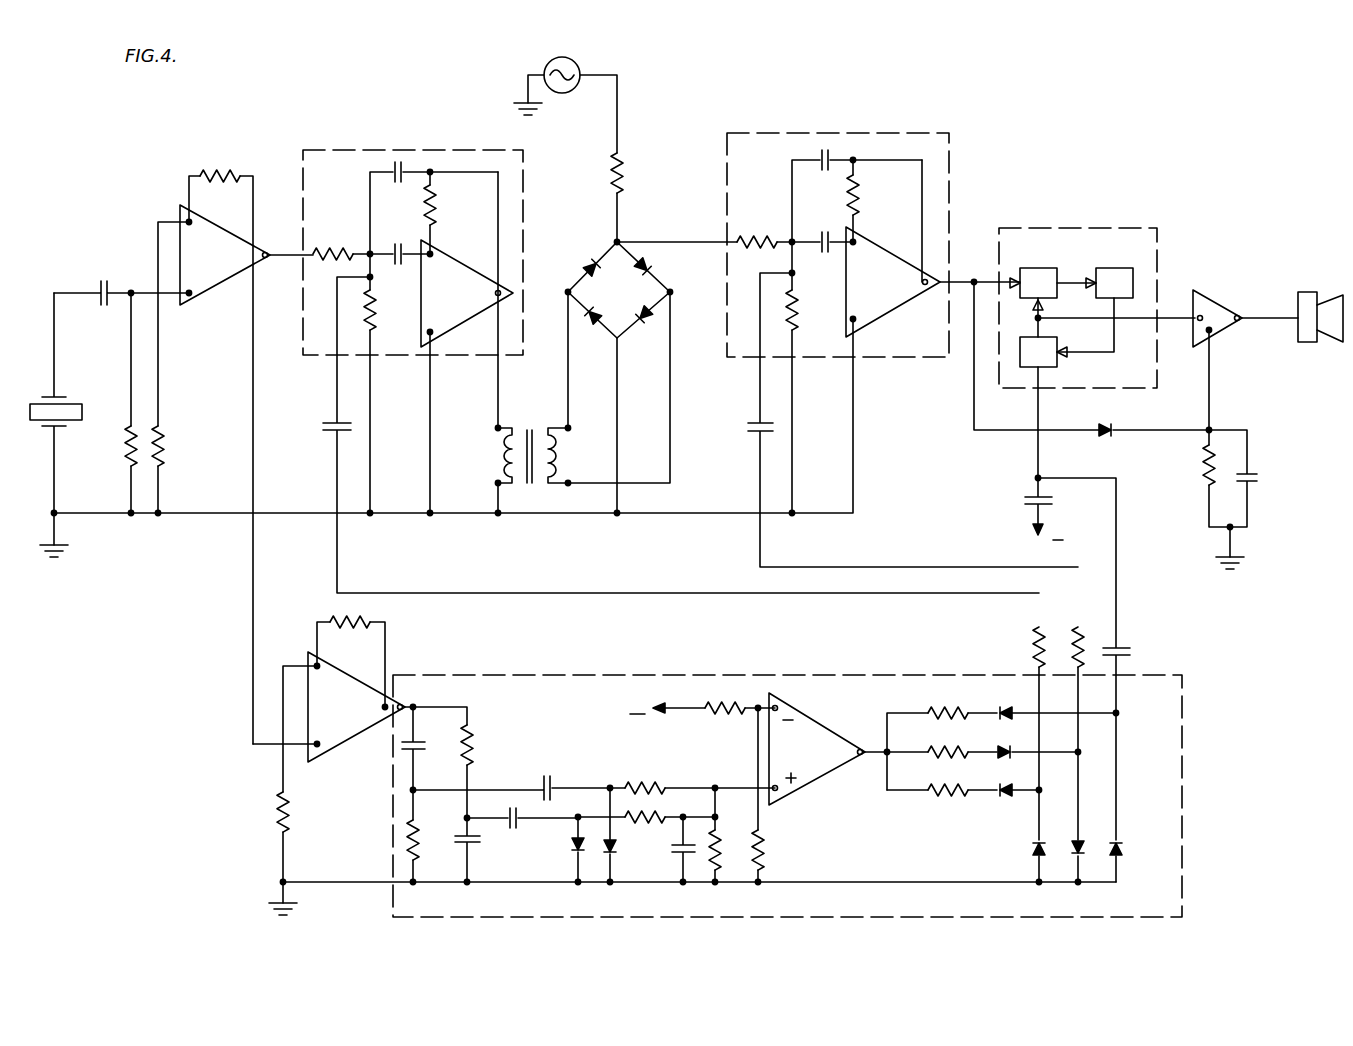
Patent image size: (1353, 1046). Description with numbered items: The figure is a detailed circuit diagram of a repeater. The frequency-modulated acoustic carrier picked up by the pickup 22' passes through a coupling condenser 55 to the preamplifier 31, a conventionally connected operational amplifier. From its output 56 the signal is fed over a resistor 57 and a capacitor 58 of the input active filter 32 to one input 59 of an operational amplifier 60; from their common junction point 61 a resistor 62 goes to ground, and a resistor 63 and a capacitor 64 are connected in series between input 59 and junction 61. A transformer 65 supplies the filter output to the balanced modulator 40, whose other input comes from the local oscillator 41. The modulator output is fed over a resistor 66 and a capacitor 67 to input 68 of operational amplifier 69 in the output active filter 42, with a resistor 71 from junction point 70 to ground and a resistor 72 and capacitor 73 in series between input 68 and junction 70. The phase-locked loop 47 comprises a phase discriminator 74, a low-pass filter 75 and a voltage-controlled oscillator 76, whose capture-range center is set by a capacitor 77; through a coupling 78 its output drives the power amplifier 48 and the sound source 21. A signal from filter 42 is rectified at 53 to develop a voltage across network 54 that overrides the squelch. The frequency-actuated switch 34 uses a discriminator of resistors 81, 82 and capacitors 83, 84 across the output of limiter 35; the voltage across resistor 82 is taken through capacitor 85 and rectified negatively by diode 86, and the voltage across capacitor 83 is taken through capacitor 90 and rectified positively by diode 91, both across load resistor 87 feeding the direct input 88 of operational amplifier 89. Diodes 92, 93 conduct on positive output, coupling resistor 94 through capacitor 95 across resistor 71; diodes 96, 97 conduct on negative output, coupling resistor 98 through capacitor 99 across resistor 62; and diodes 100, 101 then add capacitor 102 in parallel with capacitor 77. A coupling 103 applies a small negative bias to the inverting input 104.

The sound source 21 is at (1314, 291).
The pickup 22' is at (65, 403).
The preamplifier 31 is at (222, 265).
The input active filter 32 is at (410, 148).
The frequency-actuated switch 34 is at (498, 673).
The limiter 35 is at (352, 715).
The balanced modulator 40 is at (636, 303).
The local oscillator 41 is at (581, 62).
The output active filter 42 is at (906, 131).
The phase-locked loop 47 is at (1078, 226).
The power amplifier 48 is at (1214, 302).
The rectifier 53 is at (1116, 428).
The network 54 is at (1239, 458).
The coupling condenser 55 is at (103, 278).
The output of preamplifier 56 is at (266, 252).
The resistor 57 is at (333, 250).
The capacitor 58 is at (392, 250).
The input of operational amplifier 59 is at (433, 252).
The operational amplifier 60 is at (468, 301).
The common junction point 61 is at (372, 258).
The resistor 62 is at (372, 318).
The resistor 63 is at (435, 210).
The capacitor 64 is at (391, 170).
The transformer 65 is at (531, 426).
The resistor 66 is at (754, 240).
The capacitor 67 is at (819, 240).
The input of operational amplifier 68 is at (857, 252).
The operational amplifier 69 is at (891, 293).
The common junction point 70 is at (795, 256).
The resistor 71 is at (797, 312).
The resistor 72 is at (858, 203).
The capacitor 73 is at (818, 156).
The phase discriminator 74 is at (1034, 268).
The low-pass filter 75 is at (1111, 268).
The voltage-controlled oscillator 76 is at (1048, 358).
The capacitor 77 is at (1025, 496).
The coupling 78 is at (1166, 316).
The resistor 81 is at (473, 742).
The resistor 82 is at (424, 836).
The capacitor 83 is at (470, 842).
The capacitor 84 is at (426, 748).
The capacitor 85 is at (551, 780).
The diode 86 is at (616, 850).
The load resistor 87 is at (719, 846).
The direct input 88 is at (777, 792).
The operational amplifier 89 is at (807, 765).
The capacitor 90 is at (507, 817).
The diode 91 is at (571, 847).
The diode 92 is at (1000, 757).
The diode 93 is at (1080, 838).
The resistor 94 is at (1080, 632).
The capacitor 95 is at (750, 436).
The diode 96 is at (1003, 800).
The diode 97 is at (1030, 848).
The resistor 98 is at (1033, 642).
The capacitor 99 is at (322, 436).
The diode 100 is at (1003, 708).
The diode 101 is at (1121, 840).
The capacitor 102 is at (1120, 646).
The coupling 103 is at (684, 712).
The inverting input 104 is at (780, 708).